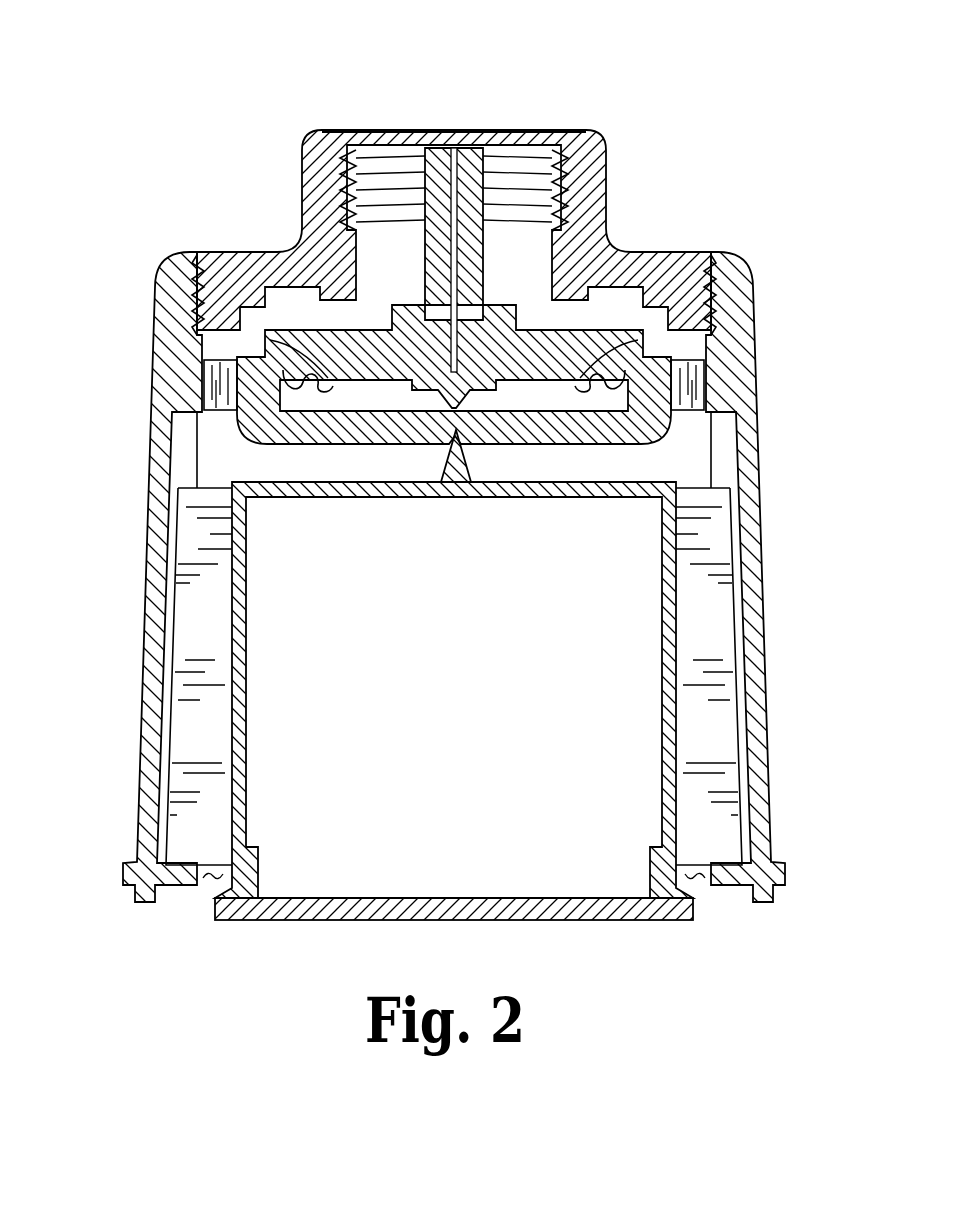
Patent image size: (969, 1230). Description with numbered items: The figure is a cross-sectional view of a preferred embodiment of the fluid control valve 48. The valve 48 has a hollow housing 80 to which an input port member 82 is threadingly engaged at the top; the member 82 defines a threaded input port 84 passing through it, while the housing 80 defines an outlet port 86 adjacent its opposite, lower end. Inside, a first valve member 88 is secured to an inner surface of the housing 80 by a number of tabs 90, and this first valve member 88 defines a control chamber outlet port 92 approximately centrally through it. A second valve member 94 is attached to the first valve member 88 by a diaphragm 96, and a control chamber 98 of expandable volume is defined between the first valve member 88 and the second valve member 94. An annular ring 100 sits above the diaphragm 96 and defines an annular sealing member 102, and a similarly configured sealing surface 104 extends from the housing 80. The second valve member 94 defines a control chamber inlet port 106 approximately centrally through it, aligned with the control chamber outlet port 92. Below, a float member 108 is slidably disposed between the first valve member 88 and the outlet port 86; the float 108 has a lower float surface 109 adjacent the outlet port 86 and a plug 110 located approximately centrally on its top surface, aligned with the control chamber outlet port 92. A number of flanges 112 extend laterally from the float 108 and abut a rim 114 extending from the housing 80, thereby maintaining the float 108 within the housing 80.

The fluid control valve 48 is at (133, 152).
The hollow housing 80 is at (745, 253).
The input port member 82 is at (586, 134).
The threaded input port 84 is at (376, 131).
The outlet port 86 is at (212, 887).
The first valve member 88 is at (300, 420).
The tabs 90 is at (200, 406).
The control chamber outlet port 92 is at (445, 440).
The second valve member 94 is at (483, 240).
The diaphragm 96 is at (312, 390).
The control chamber 98 is at (454, 384).
The annular ring 100 is at (212, 342).
The annular sealing member 102 is at (300, 327).
The sealing surface 104 is at (243, 297).
The control chamber inlet port 106 is at (454, 148).
The float member 108 is at (665, 490).
The lower float surface 109 is at (580, 920).
The plug 110 is at (470, 445).
The flanges 112 is at (166, 722).
The rim 114 is at (177, 883).